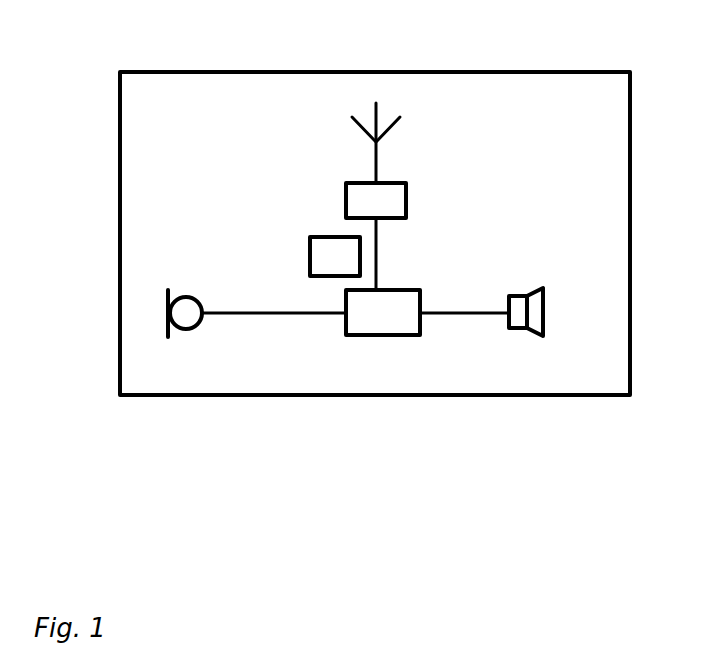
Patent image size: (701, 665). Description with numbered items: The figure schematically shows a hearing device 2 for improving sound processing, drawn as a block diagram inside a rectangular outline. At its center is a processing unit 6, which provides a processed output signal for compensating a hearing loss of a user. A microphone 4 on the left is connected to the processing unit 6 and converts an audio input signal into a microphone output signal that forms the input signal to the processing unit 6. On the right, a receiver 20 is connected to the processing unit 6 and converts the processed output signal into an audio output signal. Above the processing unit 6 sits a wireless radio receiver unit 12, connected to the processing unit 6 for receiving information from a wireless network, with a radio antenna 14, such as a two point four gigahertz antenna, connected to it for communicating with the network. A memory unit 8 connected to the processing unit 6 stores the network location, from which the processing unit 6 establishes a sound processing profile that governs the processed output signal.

The hearing device 2 is at (383, 70).
The microphone 4 is at (180, 298).
The processing unit 6 is at (397, 340).
The memory unit 8 is at (310, 252).
The wireless radio receiver unit 12 is at (408, 190).
The radio antenna 14 is at (395, 140).
The receiver 20 is at (523, 290).